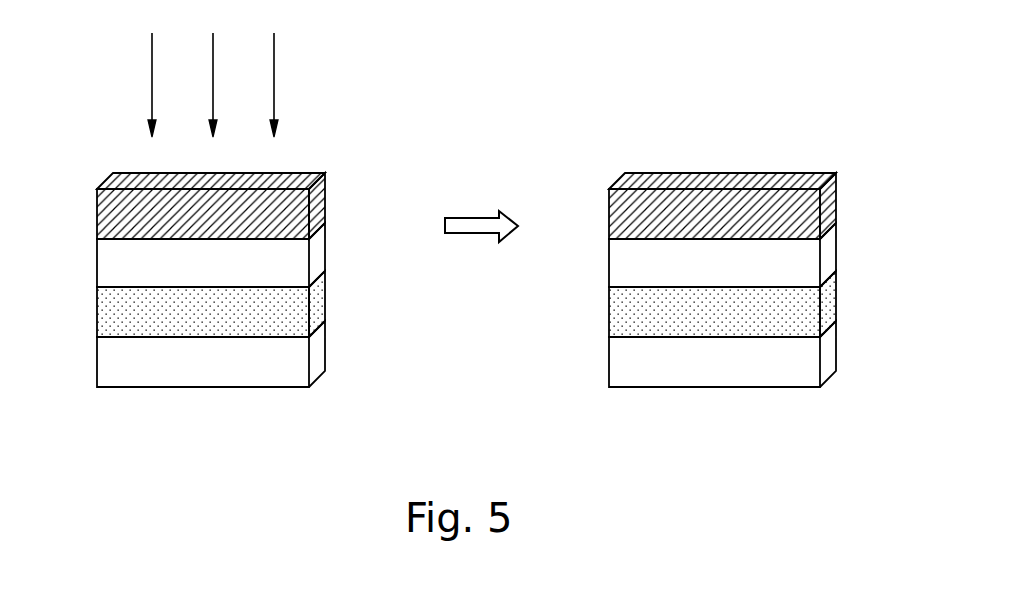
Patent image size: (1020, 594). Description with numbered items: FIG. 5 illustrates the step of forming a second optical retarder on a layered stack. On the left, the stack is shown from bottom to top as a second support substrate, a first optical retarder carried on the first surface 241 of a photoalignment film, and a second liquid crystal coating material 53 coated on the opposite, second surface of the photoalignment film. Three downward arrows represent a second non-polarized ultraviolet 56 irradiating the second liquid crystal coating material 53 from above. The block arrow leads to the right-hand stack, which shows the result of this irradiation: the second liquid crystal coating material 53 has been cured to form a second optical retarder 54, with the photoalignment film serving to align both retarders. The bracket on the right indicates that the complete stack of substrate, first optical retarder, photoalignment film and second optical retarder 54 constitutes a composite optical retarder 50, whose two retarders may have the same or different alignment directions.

The second non-polarized ultraviolet 56 is at (292, 70).
The second liquid crystal coating material 53 is at (325, 199).
The second optical retarder 54 is at (836, 199).
The first surface of the photoalignment film 241 is at (668, 288).
The composite optical retarder 50 is at (721, 289).